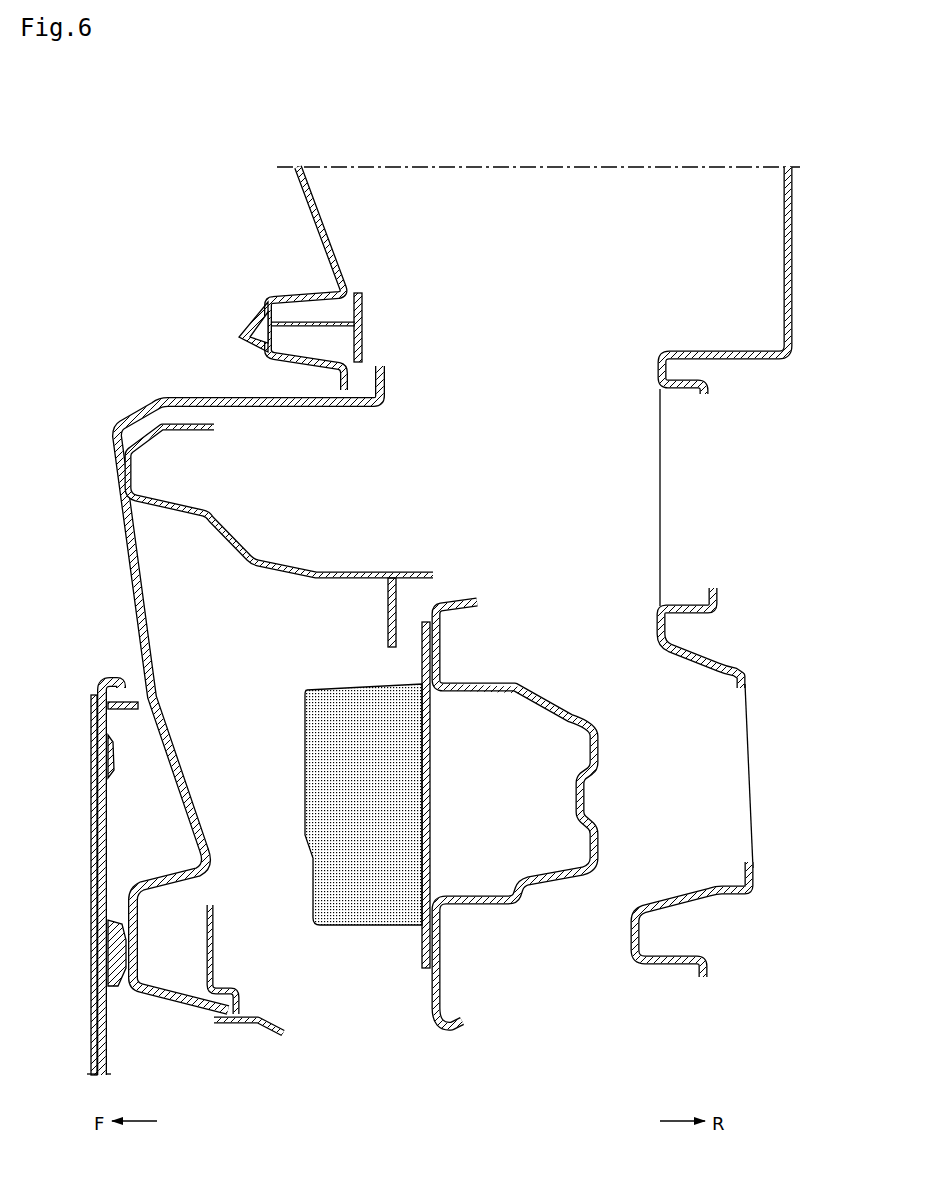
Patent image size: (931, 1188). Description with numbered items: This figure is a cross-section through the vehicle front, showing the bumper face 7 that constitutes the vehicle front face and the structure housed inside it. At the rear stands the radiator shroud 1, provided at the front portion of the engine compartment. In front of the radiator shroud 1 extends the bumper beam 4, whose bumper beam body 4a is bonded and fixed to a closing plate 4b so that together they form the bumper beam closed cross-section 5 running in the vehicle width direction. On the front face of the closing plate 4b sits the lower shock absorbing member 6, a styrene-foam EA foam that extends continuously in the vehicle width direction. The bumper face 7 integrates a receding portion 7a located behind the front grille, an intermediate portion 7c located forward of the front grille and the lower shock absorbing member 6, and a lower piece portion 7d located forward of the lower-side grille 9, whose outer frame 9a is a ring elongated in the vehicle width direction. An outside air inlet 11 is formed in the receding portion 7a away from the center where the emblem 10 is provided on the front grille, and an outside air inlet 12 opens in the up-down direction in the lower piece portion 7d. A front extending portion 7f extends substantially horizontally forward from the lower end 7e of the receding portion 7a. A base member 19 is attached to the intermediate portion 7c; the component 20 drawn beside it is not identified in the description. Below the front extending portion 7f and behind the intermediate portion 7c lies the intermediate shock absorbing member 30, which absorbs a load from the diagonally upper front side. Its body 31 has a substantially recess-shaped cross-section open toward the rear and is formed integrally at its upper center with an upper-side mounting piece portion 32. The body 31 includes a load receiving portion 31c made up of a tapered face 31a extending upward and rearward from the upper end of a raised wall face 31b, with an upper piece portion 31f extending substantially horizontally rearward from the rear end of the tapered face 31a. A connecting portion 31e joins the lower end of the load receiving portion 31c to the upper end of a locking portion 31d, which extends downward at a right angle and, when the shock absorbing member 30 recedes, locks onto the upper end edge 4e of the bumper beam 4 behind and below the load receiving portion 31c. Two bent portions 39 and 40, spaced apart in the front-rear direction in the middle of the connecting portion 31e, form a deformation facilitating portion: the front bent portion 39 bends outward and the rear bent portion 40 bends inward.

The radiator shroud 1 is at (780, 283).
The bumper beam 4 is at (508, 677).
The bumper beam body 4a is at (553, 707).
The closing plate 4b is at (432, 782).
The upper end edge 4e is at (413, 623).
The bumper beam closed cross-section 5 is at (507, 838).
The lower shock absorbing member 6 is at (305, 745).
The bumper face 7 is at (122, 418).
The receding portion 7a is at (388, 378).
The intermediate portion 7c is at (122, 575).
The lower piece portion 7d is at (130, 990).
The lower end 7e is at (382, 404).
The front extending portion 7f is at (226, 396).
The lower-side grille 9 is at (216, 946).
The outer frame 9a is at (218, 962).
The emblem 10 is at (308, 232).
The outside air inlet 11 is at (385, 365).
The outside air inlet 12 is at (194, 1054).
The base member 19 is at (110, 838).
The outer panel 20 is at (92, 806).
The intermediate shock absorbing member 30 is at (172, 418).
The body 31 is at (158, 514).
The tapered face 31a is at (147, 443).
The raised wall face 31b is at (133, 476).
The load receiving portion 31c is at (205, 440).
The locking portion 31d is at (385, 641).
The connecting portion 31e is at (292, 556).
The upper piece portion 31f is at (200, 421).
The upper-side mounting piece portion 32 is at (363, 312).
The bent portion 39 is at (207, 522).
The bent portion 40 is at (253, 564).